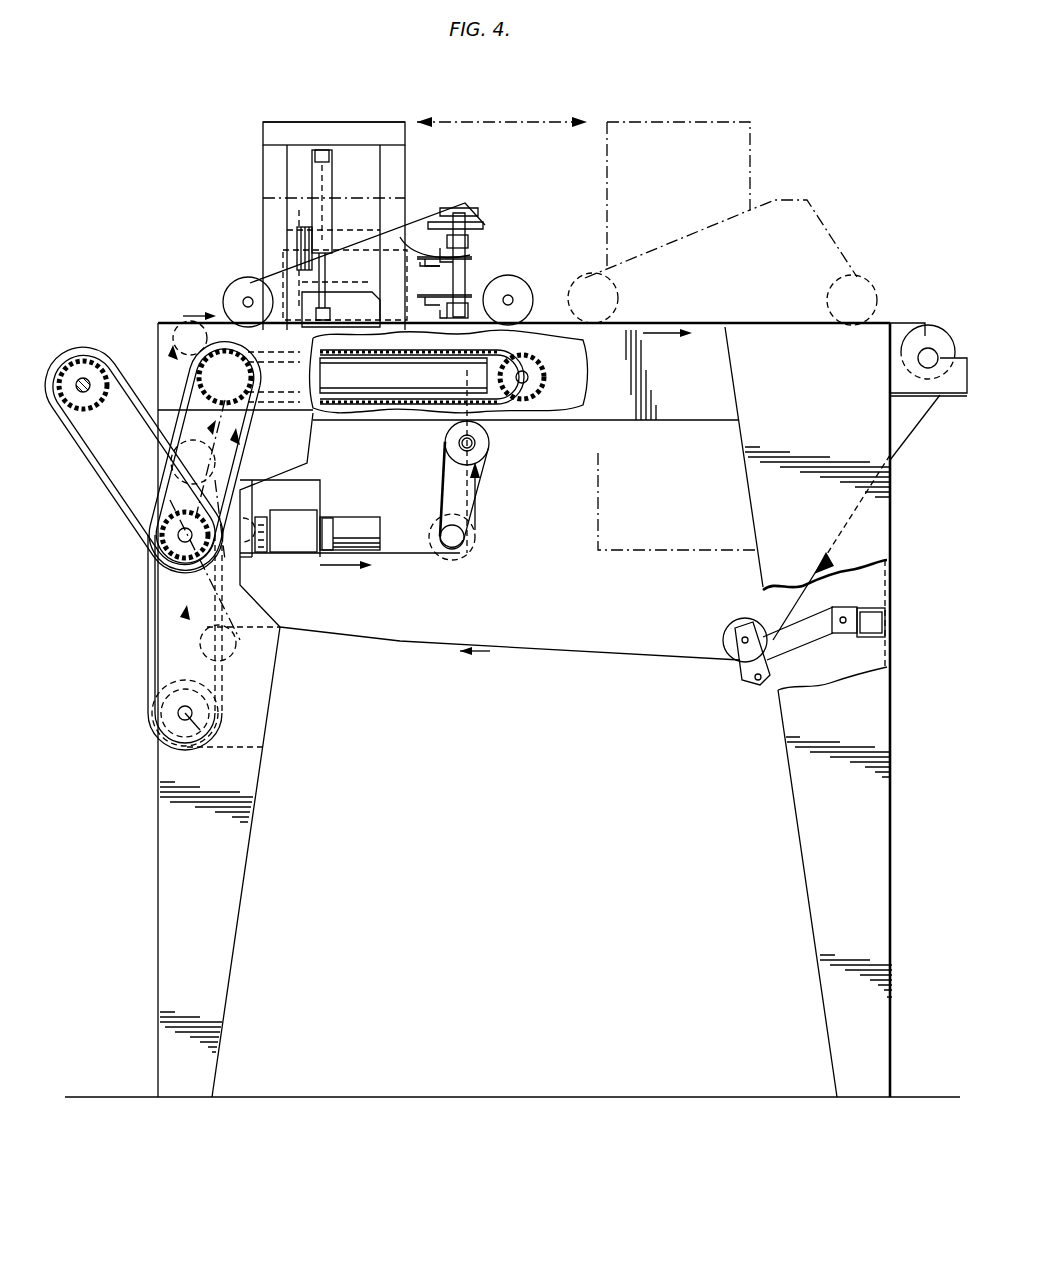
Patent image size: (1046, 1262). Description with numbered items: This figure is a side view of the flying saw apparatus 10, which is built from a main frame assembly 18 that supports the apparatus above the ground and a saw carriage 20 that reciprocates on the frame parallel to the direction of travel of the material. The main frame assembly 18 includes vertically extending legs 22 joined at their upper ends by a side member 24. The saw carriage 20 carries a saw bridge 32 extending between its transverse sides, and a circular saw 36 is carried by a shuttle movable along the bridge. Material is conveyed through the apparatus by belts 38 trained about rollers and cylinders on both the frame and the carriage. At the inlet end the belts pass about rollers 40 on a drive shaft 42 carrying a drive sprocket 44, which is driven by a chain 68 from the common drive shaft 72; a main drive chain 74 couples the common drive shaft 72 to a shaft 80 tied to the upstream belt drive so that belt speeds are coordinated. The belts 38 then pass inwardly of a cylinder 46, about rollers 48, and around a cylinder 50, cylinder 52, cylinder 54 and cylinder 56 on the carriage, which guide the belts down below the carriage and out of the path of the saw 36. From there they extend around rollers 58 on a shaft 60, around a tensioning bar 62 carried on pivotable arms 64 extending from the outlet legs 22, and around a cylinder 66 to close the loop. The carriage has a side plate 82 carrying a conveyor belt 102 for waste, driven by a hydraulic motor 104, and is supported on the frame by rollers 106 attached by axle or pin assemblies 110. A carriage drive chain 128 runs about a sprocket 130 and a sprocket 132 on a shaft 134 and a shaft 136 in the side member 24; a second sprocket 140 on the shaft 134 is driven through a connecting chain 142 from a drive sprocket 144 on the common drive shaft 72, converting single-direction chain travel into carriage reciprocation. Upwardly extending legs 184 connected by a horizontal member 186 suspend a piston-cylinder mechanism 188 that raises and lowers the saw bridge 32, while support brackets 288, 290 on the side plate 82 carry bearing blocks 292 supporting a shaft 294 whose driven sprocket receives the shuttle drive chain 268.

The flying saw apparatus 10 is at (165, 105).
The main frame assembly 18 is at (140, 842).
The saw carriage 20 is at (232, 188).
The legs 22 is at (228, 897).
The side member 24 is at (532, 420).
The saw bridge 32 is at (368, 188).
The circular saw 36 is at (297, 240).
The belts 38 is at (613, 653).
The rollers 40 is at (218, 720).
The drive shaft 42 is at (262, 752).
The drive sprocket 44 is at (222, 686).
The cylinder 46 is at (175, 468).
The rollers 48 is at (183, 312).
The cylinder 50 is at (220, 292).
The cylinder 52 is at (250, 565).
The cylinder 54 is at (460, 556).
The cylinder 56 is at (530, 322).
The rollers 58 is at (938, 340).
The shaft 60 is at (918, 340).
The tensioning bar 62 is at (740, 625).
The pivotable arms 64 is at (792, 638).
The cylinder 66 is at (280, 668).
The chain 68 is at (148, 635).
The common drive shaft 72 is at (178, 537).
The main drive chain 74 is at (96, 478).
The shaft 80 is at (83, 380).
The side plate 82 is at (432, 212).
The conveyor belt 102 is at (277, 542).
The hydraulic motor 104 is at (375, 525).
The rollers 106 is at (248, 290).
The axle or pin assembly 110 is at (512, 300).
The carriage drive chain 128 is at (553, 348).
The sprocket 130 is at (268, 366).
The sprocket 132 is at (545, 372).
The shaft 134 is at (268, 385).
The shaft 136 is at (560, 402).
The second sprocket 140 is at (80, 360).
The connecting chain 142 is at (255, 455).
The drive sprocket 144 is at (170, 560).
The legs 184 is at (265, 158).
The horizontal member 186 is at (358, 127).
The piston-cylinder mechanism 188 is at (315, 185).
The shuttle drive chain 268 is at (463, 230).
The support bracket 288 is at (415, 310).
The support bracket 290 is at (435, 245).
The bearing block 292 is at (465, 305).
The shaft 294 is at (455, 278).